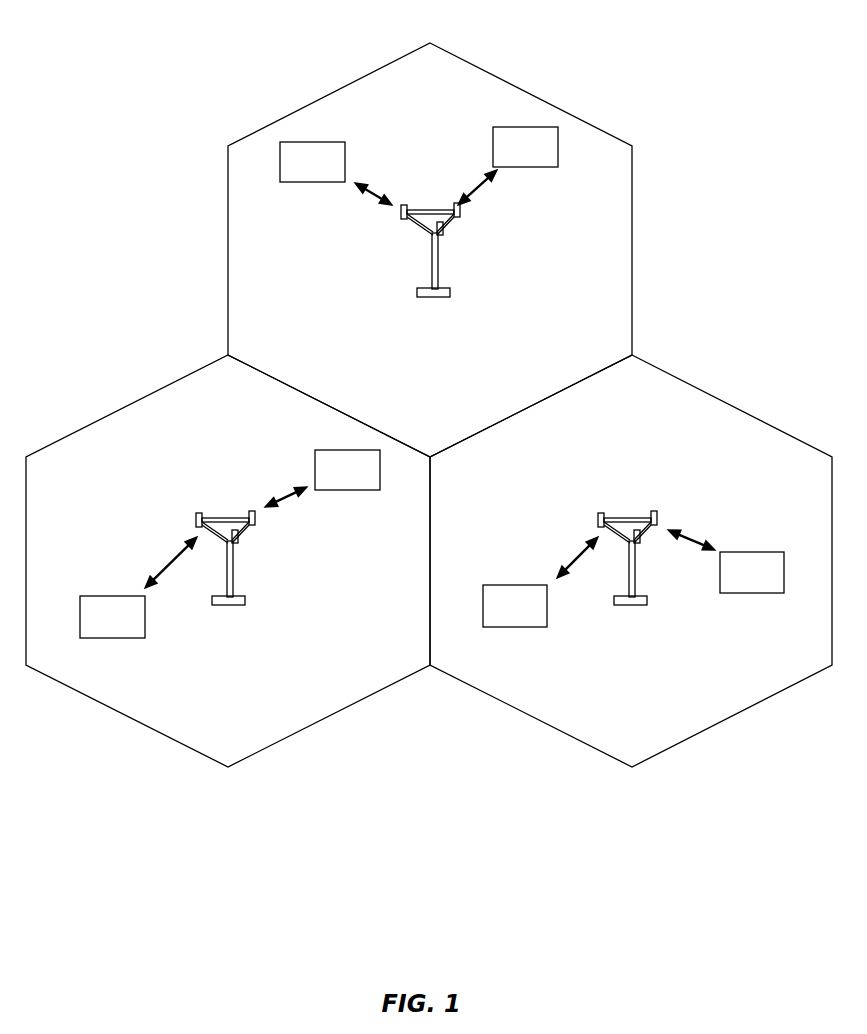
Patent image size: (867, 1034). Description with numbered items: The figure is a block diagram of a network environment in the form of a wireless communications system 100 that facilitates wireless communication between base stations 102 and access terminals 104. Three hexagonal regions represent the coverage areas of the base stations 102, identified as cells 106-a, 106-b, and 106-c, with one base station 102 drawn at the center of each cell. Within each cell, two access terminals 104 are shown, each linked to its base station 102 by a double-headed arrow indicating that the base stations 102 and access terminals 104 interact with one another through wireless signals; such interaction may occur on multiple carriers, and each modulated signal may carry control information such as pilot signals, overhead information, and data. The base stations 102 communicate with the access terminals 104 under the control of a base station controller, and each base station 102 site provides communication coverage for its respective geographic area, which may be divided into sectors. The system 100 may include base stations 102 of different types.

The wireless communications system 100 is at (774, 84).
The base station 102 is at (433, 207).
The access terminal 104 is at (301, 183).
The cell 106-a is at (107, 416).
The cell 106-b is at (514, 85).
The cell 106-c is at (733, 406).